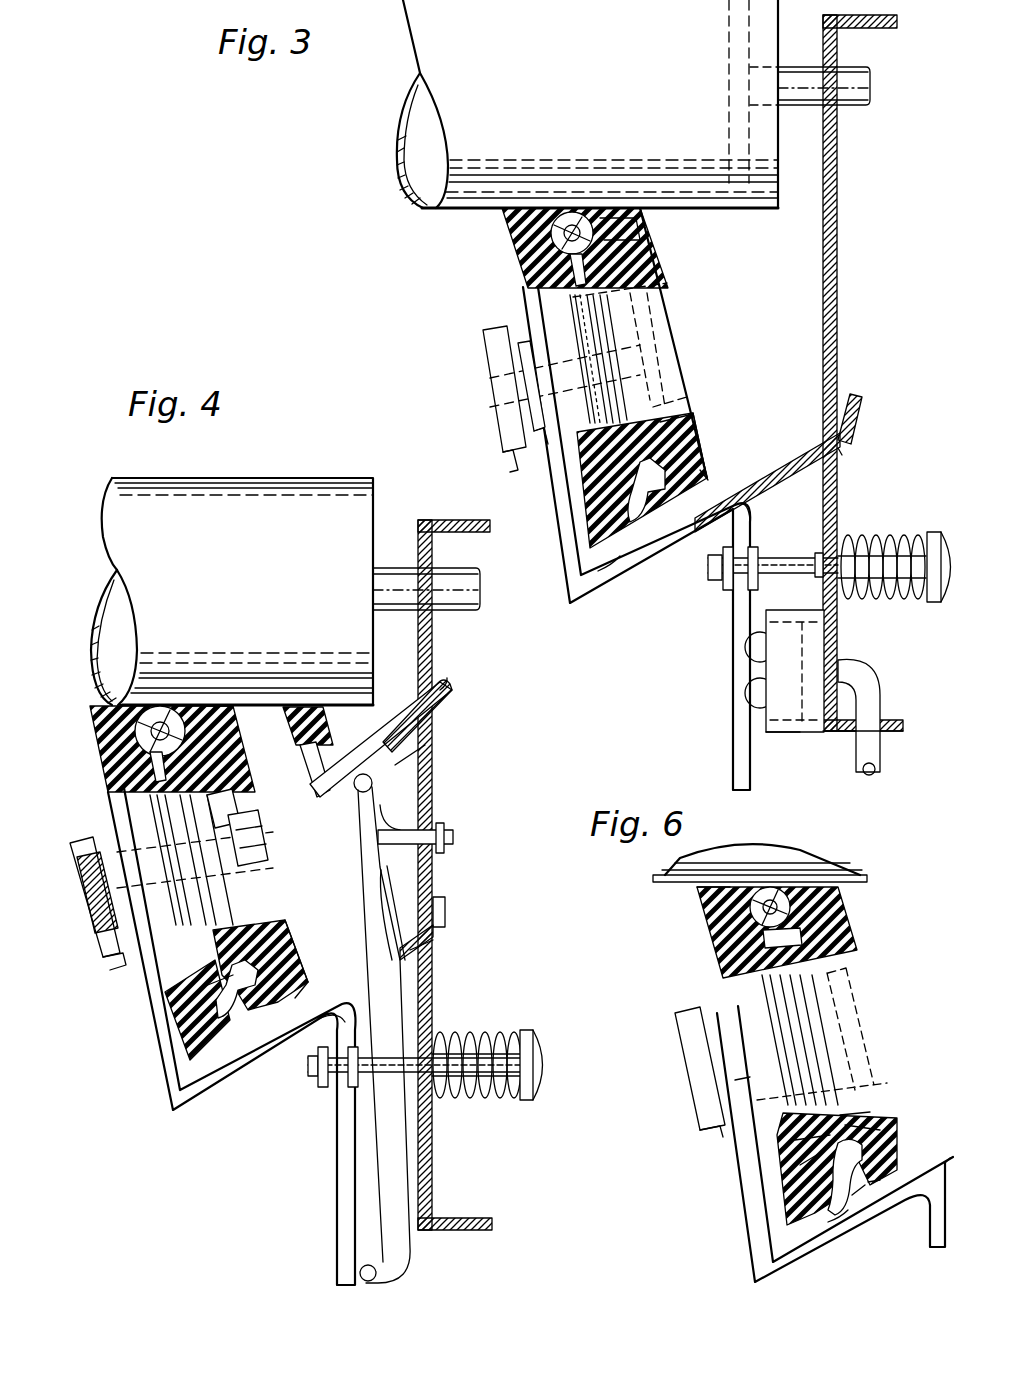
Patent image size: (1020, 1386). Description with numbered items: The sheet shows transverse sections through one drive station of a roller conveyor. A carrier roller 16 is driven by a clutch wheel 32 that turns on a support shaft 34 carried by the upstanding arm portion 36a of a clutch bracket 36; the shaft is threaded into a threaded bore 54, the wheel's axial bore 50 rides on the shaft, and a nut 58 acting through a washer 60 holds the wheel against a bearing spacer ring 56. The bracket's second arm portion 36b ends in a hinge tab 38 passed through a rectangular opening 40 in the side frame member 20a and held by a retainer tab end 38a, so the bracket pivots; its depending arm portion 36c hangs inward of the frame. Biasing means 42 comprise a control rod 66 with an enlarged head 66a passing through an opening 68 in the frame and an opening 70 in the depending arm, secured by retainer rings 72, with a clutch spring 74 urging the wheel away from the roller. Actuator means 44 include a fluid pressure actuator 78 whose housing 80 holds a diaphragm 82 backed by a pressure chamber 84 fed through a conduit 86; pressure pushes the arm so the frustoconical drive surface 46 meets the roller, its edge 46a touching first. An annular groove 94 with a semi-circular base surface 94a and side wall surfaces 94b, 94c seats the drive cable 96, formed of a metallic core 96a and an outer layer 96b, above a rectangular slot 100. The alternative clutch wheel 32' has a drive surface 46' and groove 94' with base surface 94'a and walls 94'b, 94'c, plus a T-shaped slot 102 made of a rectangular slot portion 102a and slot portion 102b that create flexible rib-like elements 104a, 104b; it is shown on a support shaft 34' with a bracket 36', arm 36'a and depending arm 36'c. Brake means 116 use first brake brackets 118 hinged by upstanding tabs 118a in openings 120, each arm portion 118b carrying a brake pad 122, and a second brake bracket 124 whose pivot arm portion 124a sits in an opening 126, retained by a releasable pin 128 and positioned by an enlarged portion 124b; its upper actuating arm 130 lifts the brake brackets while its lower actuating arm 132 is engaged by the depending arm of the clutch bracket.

In FIG. 3, the carrier roller 16 is at (436, 212).
In FIG. 4, the carrier roller 16 is at (172, 478).
In FIG. 6, the carrier roller 16 is at (660, 875).
In FIG. 3, the side frame member 20a is at (846, 214).
In FIG. 4, the side frame member 20a is at (434, 644).
In FIG. 3, the clutch wheel 32 is at (613, 254).
In FIG. 4, the clutch wheel 32 is at (149, 749).
In FIG. 6, the clutch wheel 32' is at (744, 932).
In FIG. 3, the support shaft 34 is at (531, 399).
In FIG. 4, the support shaft 34 is at (85, 897).
In FIG. 6, the mounting plate (alternate) 34' is at (673, 1072).
In FIG. 3, the clutch bracket 36 is at (636, 499).
In FIG. 4, the clutch bracket 36 is at (208, 1036).
In FIG. 6, the channel member (alternate) 36' is at (815, 1146).
In FIG. 3, the upstanding arm portion 36a is at (532, 456).
In FIG. 4, the upstanding arm portion 36a is at (134, 975).
In FIG. 6, the channel inner leg (alternate) 36'a is at (750, 1108).
In FIG. 3, the second arm portion 36b is at (752, 506).
In FIG. 4, the second arm portion 36b is at (320, 1028).
In FIG. 3, the depending arm portion 36c is at (731, 725).
In FIG. 4, the depending arm portion 36c is at (335, 1220).
In FIG. 6, the channel vertical leg (alternate) 36'c is at (931, 1248).
In FIG. 3, the hinge tab 38 is at (842, 448).
In FIG. 4, the hinge tab 38 is at (390, 935).
In FIG. 3, the retainer tab end 38a is at (862, 404).
In FIG. 4, the retainer tab end 38a is at (446, 912).
In FIG. 3, the rectangular opening 40 is at (845, 452).
In FIG. 4, the rectangular opening 40 is at (434, 943).
In FIG. 3, the biasing means 42 is at (915, 538).
In FIG. 4, the biasing means 42 is at (518, 1032).
In FIG. 3, the actuator means 44 is at (828, 768).
In FIG. 4, the frustoconical peripheral drive surface 46 is at (103, 749).
In FIG. 6, the frustoconical peripheral drive surface 46' is at (678, 906).
In FIG. 3, the edge of drive surface 46a is at (650, 212).
In FIG. 4, the edge of drive surface 46a is at (232, 712).
In FIG. 4, the axial bore 50 is at (258, 870).
In FIG. 4, the threaded bore 54 is at (80, 880).
In FIG. 4, the bearing spacer ring 56 is at (112, 960).
In FIG. 4, the nut 58 is at (262, 832).
In FIG. 4, the washer 60 is at (240, 800).
In FIG. 3, the control rod 66 is at (796, 560).
In FIG. 4, the control rod 66 is at (380, 1080).
In FIG. 3, the enlarged head 66a is at (933, 603).
In FIG. 4, the enlarged head 66a is at (528, 1101).
In FIG. 3, the opening 68 is at (820, 572).
In FIG. 3, the opening 70 is at (710, 582).
In FIG. 3, the retainer rings 72 is at (752, 548).
In FIG. 4, the retainer rings 72 is at (323, 1088).
In FIG. 3, the clutch spring 74 is at (870, 535).
In FIG. 4, the clutch spring 74 is at (470, 1032).
In FIG. 3, the fluid pressure actuator 78 is at (775, 740).
In FIG. 3, the housing 80 is at (830, 734).
In FIG. 3, the actuator piston or diaphragm 82 is at (745, 660).
In FIG. 3, the pressure chamber 84 is at (772, 736).
In FIG. 3, the fluid pressure conduit 86 is at (878, 685).
In FIG. 3, the annular groove 94 is at (642, 503).
In FIG. 4, the annular groove 94 is at (236, 1005).
In FIG. 6, the annular drive groove 94' is at (837, 1169).
In FIG. 3, the semi-circular base surface 94a is at (700, 432).
In FIG. 4, the semi-circular base surface 94a is at (290, 925).
In FIG. 6, the base surface 94'a is at (876, 1221).
In FIG. 3, the side wall surface 94b is at (628, 566).
In FIG. 6, the lower jaw bottom (alternate) 94'b is at (842, 1245).
In FIG. 3, the side wall surface 94c is at (708, 470).
In FIG. 4, the side wall surface 94c is at (298, 985).
In FIG. 6, the lower jaw edge (alternate) 94'c is at (900, 1207).
In FIG. 3, the drive cable 96 is at (552, 233).
In FIG. 4, the drive cable 96 is at (138, 722).
In FIG. 6, the drive cable 96 is at (772, 888).
In FIG. 3, the metallic core 96a is at (642, 236).
In FIG. 6, the metallic core 96a is at (842, 900).
In FIG. 3, the outer layer 96b is at (570, 264).
In FIG. 3, the slot 100 is at (665, 412).
In FIG. 4, the slot 100 is at (210, 985).
In FIG. 6, the T-shaped slot 102 is at (872, 1088).
In FIG. 6, the annular rectangular slot portion 102a is at (872, 1112).
In FIG. 6, the annular slot portion 102b is at (795, 1140).
In FIG. 6, the annular rib-like element 104a is at (882, 1130).
In FIG. 6, the annular rib-like element 104b is at (800, 1165).
In FIG. 4, the brake means 116 is at (392, 800).
In FIG. 4, the first brake bracket 118 is at (400, 752).
In FIG. 4, the upstanding tab 118a is at (452, 684).
In FIG. 4, the upstanding arm portion 118b is at (312, 775).
In FIG. 4, the rectangular opening 120 is at (448, 700).
In FIG. 4, the brake pad 122 is at (322, 722).
In FIG. 4, the second brake bracket 124 is at (405, 1165).
In FIG. 4, the pivot arm portion 124a is at (455, 836).
In FIG. 4, the enlarged portion 124b is at (410, 878).
In FIG. 4, the rectangular opening 126 is at (432, 812).
In FIG. 4, the releasable pin 128 is at (445, 850).
In FIG. 4, the upper actuating arm 130 is at (355, 792).
In FIG. 4, the lower actuating arm 132 is at (369, 1282).